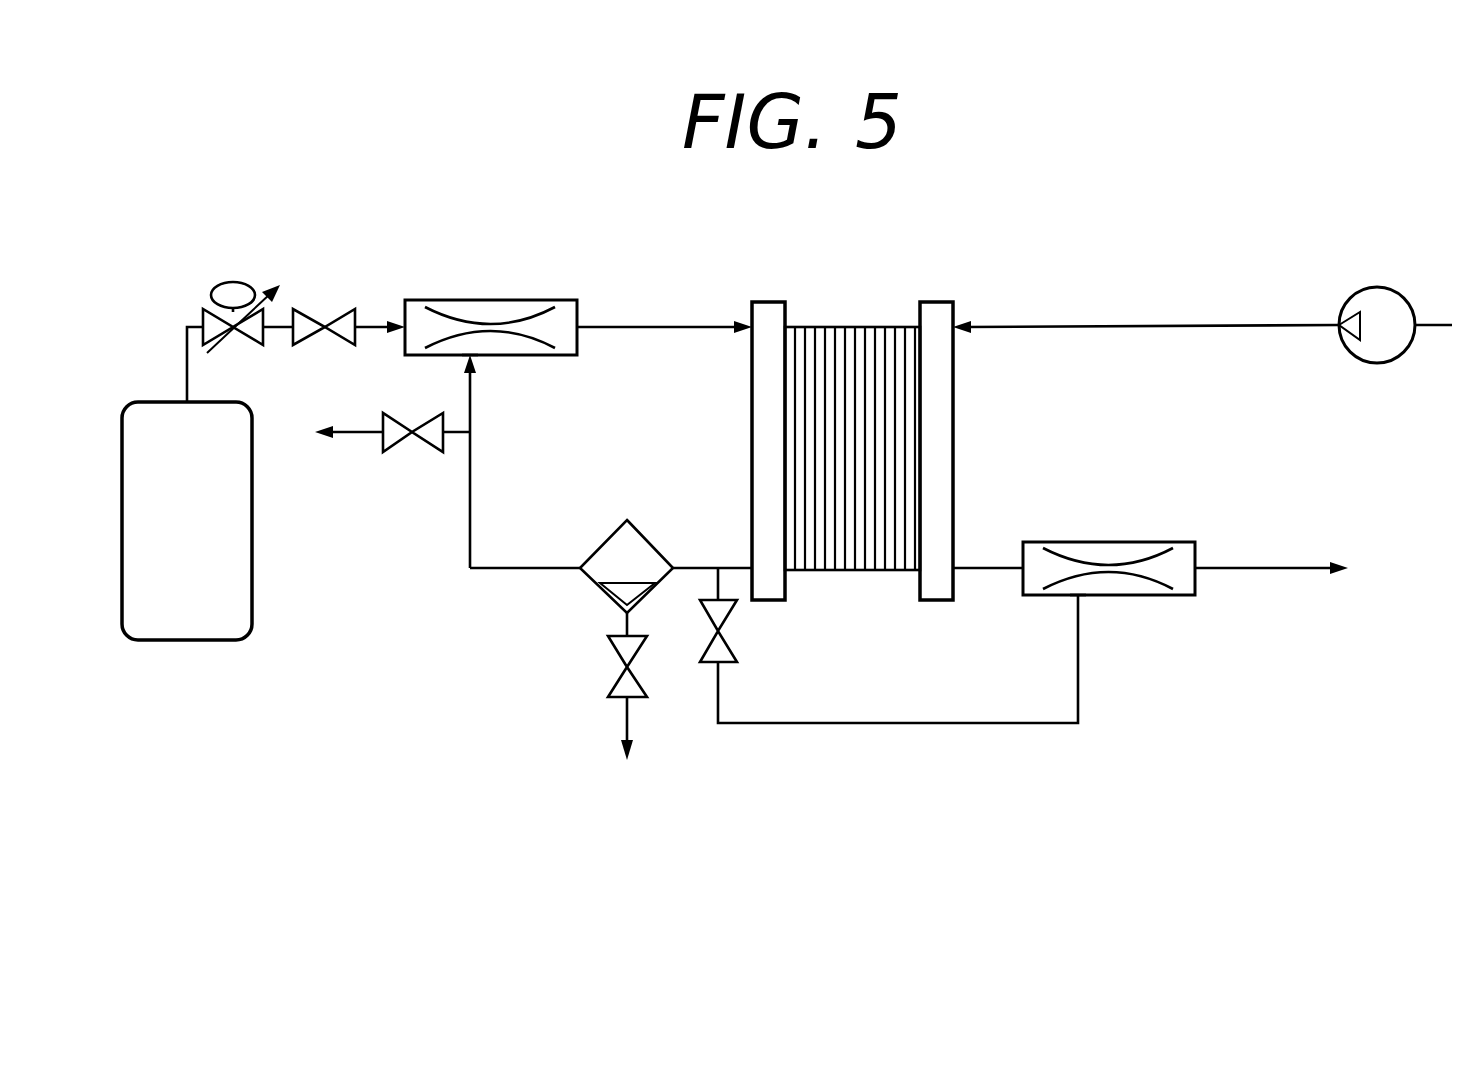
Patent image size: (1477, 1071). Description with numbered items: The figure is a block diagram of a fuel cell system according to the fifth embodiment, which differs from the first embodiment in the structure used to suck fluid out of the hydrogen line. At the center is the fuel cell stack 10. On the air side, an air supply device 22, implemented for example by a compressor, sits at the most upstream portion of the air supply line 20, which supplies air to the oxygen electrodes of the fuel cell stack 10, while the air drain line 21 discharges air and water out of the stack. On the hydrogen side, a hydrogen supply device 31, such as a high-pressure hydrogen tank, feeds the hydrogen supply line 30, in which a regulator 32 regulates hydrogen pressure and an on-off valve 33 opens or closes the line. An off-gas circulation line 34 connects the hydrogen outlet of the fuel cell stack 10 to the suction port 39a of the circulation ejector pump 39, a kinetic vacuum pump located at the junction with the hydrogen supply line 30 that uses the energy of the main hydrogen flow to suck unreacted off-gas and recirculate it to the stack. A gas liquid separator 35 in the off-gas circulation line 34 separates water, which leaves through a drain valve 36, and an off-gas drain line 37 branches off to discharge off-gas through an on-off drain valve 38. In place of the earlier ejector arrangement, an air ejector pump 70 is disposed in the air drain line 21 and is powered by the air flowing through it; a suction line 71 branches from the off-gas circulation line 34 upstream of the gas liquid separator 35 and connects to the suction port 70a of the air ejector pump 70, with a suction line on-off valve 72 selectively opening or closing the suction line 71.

The fuel cell stack 10 is at (835, 557).
The air supply line 20 is at (997, 330).
The air drain line 21 is at (1280, 570).
The air supply device 22 is at (1377, 363).
The hydrogen supply line 30 is at (187, 370).
The hydrogen supply device 31 is at (196, 642).
The regulator 32 is at (228, 282).
The on-off valve 33 is at (325, 310).
The off-gas circulation line 34 is at (470, 500).
The gas liquid separator 35 is at (637, 530).
The drain valve 36 is at (625, 663).
The off-gas drain line 37 is at (357, 430).
The on-off drain valve 38 is at (408, 447).
The circulation ejector pump 39 is at (507, 300).
The suction port 39a is at (473, 357).
The air ejector pump 70 is at (1108, 542).
The suction port 70a is at (1080, 597).
The suction line 71 is at (1018, 725).
The suction line on-off valve 72 is at (730, 633).